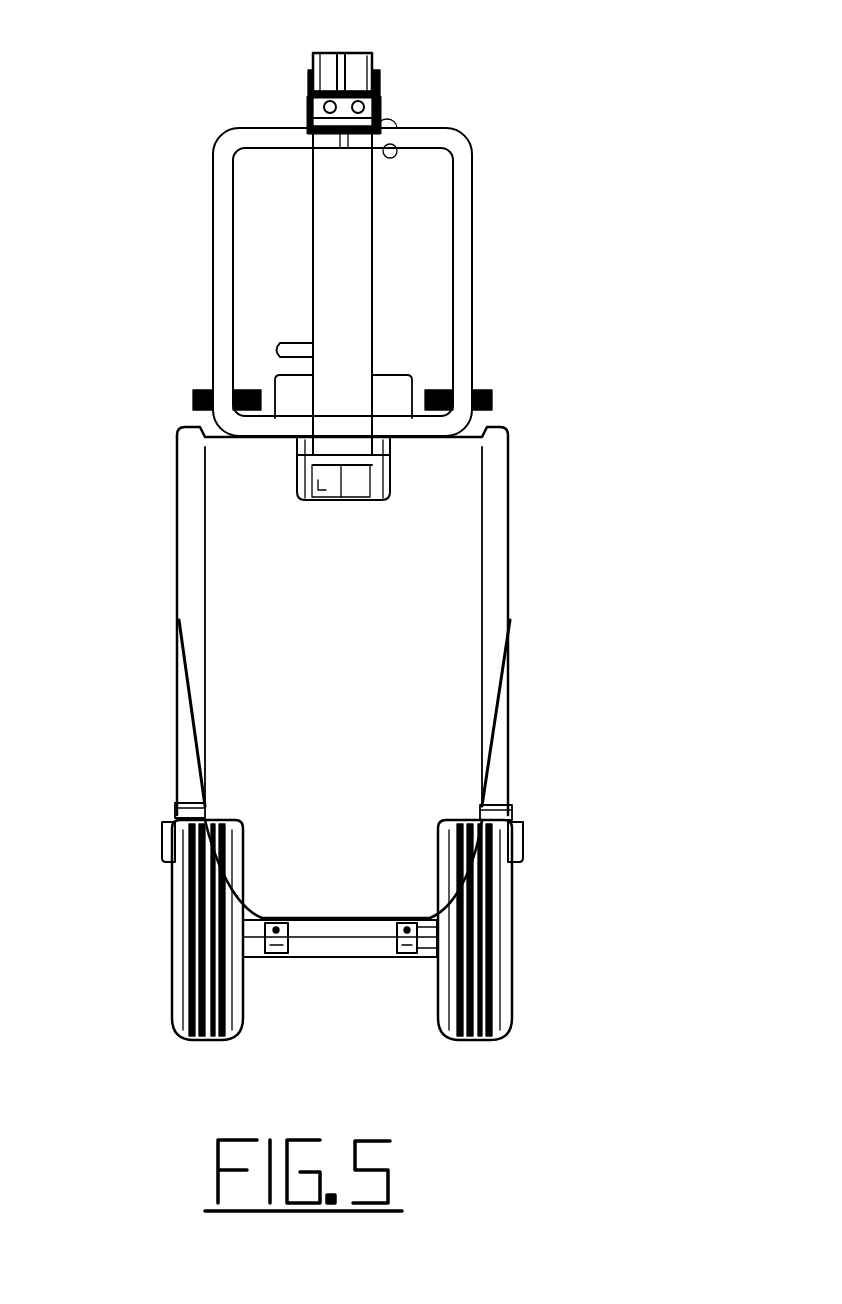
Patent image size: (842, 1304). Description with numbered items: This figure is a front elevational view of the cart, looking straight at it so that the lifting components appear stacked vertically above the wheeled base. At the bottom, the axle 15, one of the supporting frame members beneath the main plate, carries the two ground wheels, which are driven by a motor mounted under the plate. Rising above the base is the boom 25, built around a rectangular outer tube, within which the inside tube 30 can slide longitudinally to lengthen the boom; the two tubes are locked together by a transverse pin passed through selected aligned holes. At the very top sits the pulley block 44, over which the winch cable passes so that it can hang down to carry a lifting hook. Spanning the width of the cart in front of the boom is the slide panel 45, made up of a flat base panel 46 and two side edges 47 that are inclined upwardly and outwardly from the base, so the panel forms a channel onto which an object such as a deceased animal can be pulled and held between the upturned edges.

The axle 15 is at (355, 928).
The boom 25 is at (352, 282).
The inside tube 30 is at (223, 295).
The pulley block 44 is at (355, 63).
The slide panel 45 is at (518, 500).
The flat base panel 46 is at (428, 587).
The side edges 47 is at (193, 628).